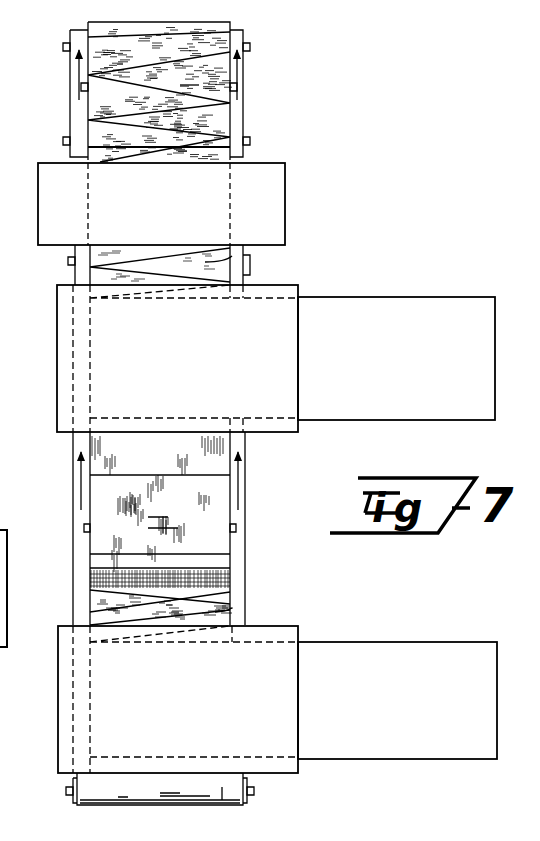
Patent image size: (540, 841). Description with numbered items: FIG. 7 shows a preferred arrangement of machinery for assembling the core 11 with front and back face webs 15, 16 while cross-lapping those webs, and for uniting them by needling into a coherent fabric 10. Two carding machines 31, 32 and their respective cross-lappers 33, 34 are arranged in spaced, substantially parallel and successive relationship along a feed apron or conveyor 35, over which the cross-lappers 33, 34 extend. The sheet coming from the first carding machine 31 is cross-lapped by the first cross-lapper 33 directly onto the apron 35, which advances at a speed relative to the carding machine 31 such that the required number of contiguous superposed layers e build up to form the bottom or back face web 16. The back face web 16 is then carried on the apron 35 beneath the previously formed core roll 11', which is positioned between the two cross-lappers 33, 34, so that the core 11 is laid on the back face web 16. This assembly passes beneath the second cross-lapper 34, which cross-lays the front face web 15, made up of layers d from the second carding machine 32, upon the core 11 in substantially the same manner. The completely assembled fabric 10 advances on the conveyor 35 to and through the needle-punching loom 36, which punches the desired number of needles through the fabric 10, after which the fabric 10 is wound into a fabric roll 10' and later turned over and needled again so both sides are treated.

The fabric 10 is at (164, 108).
The fabric roll 10' is at (194, 74).
The needle-punching loom 36 is at (147, 194).
The front face web 15 is at (246, 270).
The layer of front face web d is at (205, 262).
The second cross-lapper 34 is at (190, 327).
The second carding machine 32 is at (402, 329).
The core 11 is at (190, 528).
The core roll 11' is at (163, 511).
The back face web 16 is at (238, 600).
The layer of back face web e is at (215, 612).
The first cross-lapper 33 is at (182, 672).
The first carding machine 31 is at (400, 671).
The feed apron 35 is at (223, 803).